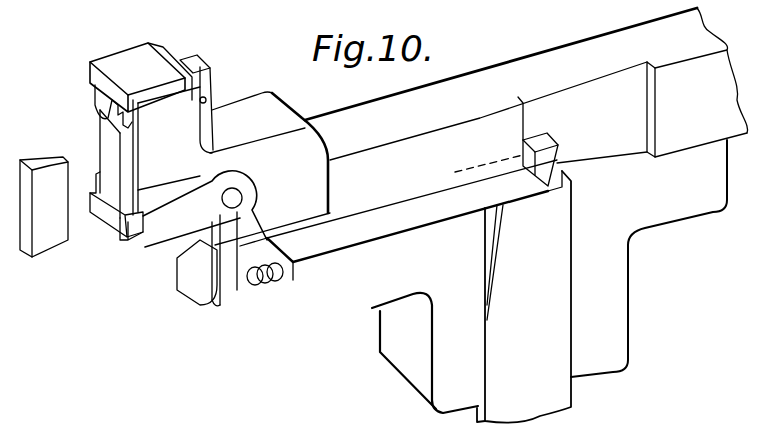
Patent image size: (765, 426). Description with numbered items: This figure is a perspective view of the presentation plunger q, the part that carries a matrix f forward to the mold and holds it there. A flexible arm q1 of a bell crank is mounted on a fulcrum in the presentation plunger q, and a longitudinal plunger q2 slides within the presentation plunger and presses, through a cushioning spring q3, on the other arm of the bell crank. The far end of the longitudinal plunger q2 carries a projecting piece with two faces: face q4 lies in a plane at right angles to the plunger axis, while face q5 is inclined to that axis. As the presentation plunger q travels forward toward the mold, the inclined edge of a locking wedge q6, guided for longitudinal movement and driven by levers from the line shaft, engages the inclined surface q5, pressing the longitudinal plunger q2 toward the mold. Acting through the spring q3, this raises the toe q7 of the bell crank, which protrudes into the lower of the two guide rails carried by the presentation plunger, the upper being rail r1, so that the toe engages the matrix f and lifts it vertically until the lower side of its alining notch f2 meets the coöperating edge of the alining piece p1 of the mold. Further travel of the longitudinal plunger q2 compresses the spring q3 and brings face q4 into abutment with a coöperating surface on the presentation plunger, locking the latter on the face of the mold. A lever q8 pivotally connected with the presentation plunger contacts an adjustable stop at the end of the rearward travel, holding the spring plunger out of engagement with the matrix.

The presentation plunger q is at (292, 147).
The flexible arm of bell crank q1 is at (188, 218).
The longitudinal plunger q2 is at (367, 232).
The cushioning spring q3 is at (270, 284).
The face of projecting piece q4 is at (537, 145).
The inclined face of projecting piece q5 is at (557, 165).
The locking wedge q6 is at (560, 255).
The toe of bell crank q7 is at (128, 207).
The lever q8 is at (200, 77).
The matrix f is at (113, 160).
The alining notch f2 is at (118, 211).
The guide rail r1 is at (97, 72).
The alining piece p1 is at (55, 237).